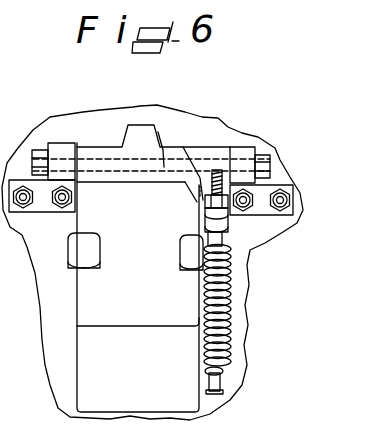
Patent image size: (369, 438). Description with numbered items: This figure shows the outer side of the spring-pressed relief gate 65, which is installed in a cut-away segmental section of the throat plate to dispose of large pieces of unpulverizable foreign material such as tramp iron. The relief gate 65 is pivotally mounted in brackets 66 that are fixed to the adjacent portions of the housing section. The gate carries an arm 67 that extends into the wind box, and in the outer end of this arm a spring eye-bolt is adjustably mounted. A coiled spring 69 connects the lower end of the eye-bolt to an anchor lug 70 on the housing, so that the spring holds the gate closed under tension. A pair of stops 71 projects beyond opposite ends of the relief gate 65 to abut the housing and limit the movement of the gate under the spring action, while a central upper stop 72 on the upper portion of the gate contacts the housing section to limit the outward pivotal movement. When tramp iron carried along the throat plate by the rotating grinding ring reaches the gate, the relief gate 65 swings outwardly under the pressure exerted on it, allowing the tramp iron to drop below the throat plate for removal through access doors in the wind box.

The relief gate 65 is at (134, 309).
The brackets 66 is at (61, 143).
The arm 67 is at (230, 220).
The coiled spring 69 is at (231, 317).
The anchor lug 70 is at (222, 383).
The stops 71 is at (187, 255).
The central upper stop 72 is at (145, 138).